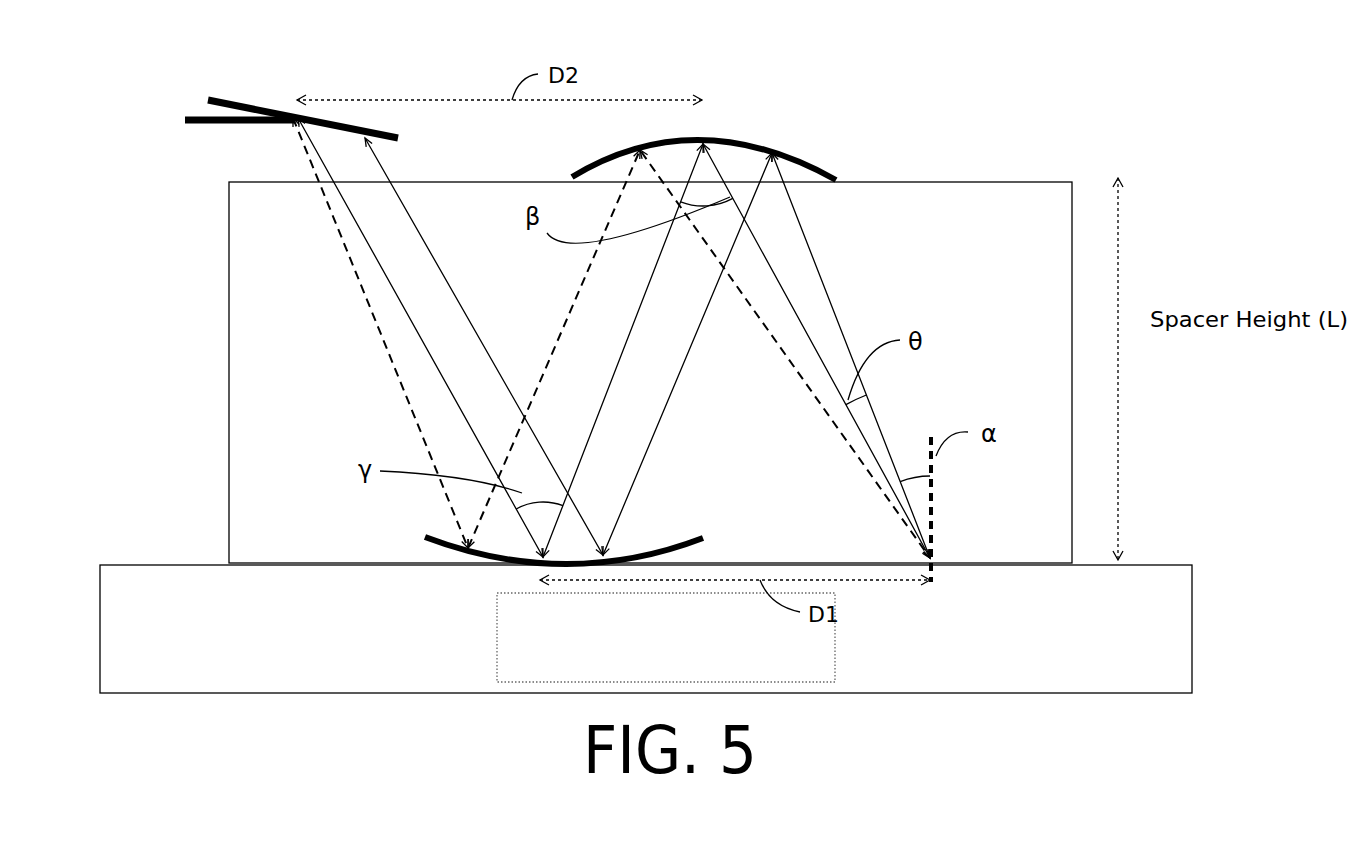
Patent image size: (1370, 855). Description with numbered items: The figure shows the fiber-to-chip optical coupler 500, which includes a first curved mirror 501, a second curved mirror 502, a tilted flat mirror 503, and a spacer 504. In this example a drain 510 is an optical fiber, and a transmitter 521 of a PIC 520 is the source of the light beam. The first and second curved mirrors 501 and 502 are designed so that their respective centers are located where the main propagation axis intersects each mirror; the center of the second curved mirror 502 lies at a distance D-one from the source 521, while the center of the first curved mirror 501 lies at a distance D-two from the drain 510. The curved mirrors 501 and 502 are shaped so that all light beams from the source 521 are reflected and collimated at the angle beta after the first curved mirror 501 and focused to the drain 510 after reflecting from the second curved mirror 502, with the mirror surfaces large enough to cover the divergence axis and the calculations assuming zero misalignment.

The fiber-to-chip optical coupler 500 is at (941, 110).
The first curved mirror 501 is at (800, 148).
The second curved mirror 502 is at (665, 543).
The tilted flat mirror 503 is at (400, 182).
The spacer 504 is at (230, 323).
The drain 510 is at (183, 126).
The PIC 520 is at (688, 661).
The transmitter 521 is at (938, 562).